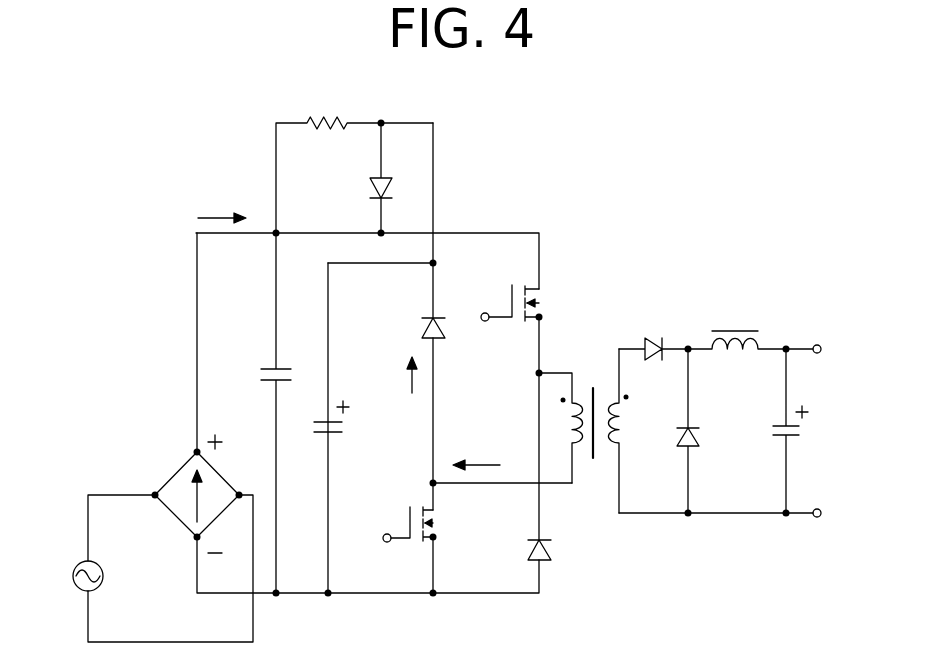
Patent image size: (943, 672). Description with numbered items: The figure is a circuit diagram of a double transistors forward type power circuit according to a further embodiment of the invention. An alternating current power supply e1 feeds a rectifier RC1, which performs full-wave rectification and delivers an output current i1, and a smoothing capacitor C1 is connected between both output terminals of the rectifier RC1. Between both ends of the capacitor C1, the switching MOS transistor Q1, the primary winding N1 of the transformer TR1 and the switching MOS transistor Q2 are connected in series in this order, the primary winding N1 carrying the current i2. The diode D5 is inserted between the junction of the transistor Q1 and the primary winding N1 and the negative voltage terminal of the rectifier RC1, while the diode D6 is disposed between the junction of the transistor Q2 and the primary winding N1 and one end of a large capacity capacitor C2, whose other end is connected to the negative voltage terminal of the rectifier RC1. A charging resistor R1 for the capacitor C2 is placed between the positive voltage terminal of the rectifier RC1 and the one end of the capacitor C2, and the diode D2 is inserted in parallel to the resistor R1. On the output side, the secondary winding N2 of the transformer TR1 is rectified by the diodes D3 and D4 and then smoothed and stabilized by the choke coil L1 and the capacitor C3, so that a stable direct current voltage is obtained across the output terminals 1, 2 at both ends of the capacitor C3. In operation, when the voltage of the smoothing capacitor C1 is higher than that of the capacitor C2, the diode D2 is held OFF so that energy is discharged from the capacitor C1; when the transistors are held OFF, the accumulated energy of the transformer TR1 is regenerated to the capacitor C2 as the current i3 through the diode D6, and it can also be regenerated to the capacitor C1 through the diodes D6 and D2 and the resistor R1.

The charging resistor R1 is at (354, 162).
The diode D2 is at (363, 178).
The output current of the rectifier i1 is at (222, 205).
The smoothing capacitor C1 is at (264, 413).
The large capacity capacitor C2 is at (340, 402).
The diode D6 is at (416, 325).
The regeneration current i3 is at (406, 391).
The primary winding current i2 is at (476, 452).
The switching MOS transistor Q1 is at (526, 294).
The switching MOS transistor Q2 is at (407, 511).
The diode D5 is at (558, 550).
The transformer TR1 is at (599, 428).
The primary winding N1 is at (561, 428).
The secondary winding N2 is at (634, 431).
The diode D3 is at (653, 335).
The choke coil L1 is at (750, 328).
The diode D4 is at (704, 431).
The capacitor C3 is at (798, 431).
The output terminal 1 is at (828, 349).
The output terminal 2 is at (828, 513).
The rectifier RC1 is at (179, 494).
The alternating current power supply e1 is at (148, 568).